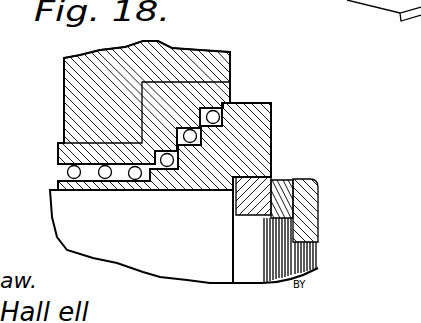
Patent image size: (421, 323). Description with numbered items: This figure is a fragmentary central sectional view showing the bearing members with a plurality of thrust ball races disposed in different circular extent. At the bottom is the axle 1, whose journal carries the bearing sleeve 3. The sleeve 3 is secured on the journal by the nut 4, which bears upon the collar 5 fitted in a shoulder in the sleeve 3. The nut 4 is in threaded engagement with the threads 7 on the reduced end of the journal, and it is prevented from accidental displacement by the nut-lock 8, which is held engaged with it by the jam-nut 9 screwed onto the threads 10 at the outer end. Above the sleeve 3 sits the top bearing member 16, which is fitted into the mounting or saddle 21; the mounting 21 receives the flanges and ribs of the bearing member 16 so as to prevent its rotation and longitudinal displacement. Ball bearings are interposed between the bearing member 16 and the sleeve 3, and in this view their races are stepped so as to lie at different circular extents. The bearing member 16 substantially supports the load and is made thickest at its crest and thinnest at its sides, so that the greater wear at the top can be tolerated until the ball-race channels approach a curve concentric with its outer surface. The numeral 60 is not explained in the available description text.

The axle 1 is at (184, 236).
The bearing sleeve 3 is at (118, 188).
The nut 4 is at (287, 185).
The collar 5 is at (262, 178).
The threads 7 is at (260, 283).
The nut-lock 8 is at (318, 183).
The jam-nut 9 is at (304, 207).
The threads 10 is at (316, 265).
The bearing member 16 is at (83, 158).
The mounting or saddle 21 is at (82, 101).
The plate (adjacent figure) 60 is at (363, 14).